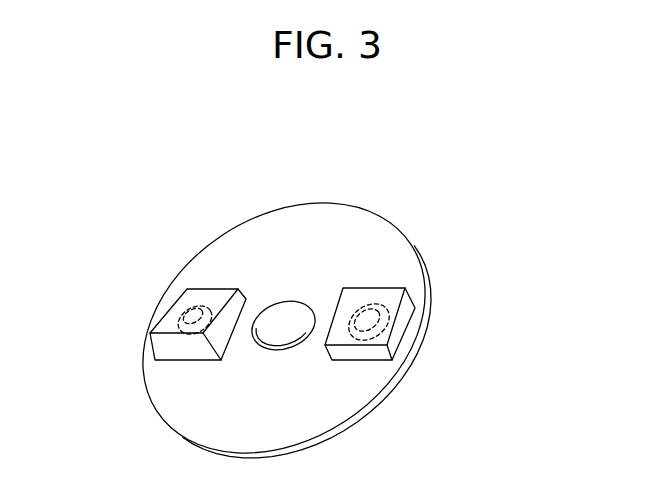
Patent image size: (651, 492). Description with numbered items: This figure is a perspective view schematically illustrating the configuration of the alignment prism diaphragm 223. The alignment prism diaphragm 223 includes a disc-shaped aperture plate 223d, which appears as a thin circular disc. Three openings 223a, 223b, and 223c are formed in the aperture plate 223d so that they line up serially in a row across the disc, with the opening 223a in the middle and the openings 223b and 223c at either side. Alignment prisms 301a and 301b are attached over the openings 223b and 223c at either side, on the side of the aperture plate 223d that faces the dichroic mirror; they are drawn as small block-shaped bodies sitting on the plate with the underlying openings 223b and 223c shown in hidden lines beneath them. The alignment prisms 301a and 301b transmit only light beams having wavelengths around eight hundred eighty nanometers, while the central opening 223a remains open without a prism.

The alignment prism diaphragm 223 is at (384, 174).
The opening 223a is at (313, 337).
The opening 223b is at (207, 320).
The opening 223c is at (383, 336).
The aperture plate 223d is at (397, 255).
The alignment prism 301a is at (180, 352).
The alignment prism 301b is at (403, 322).